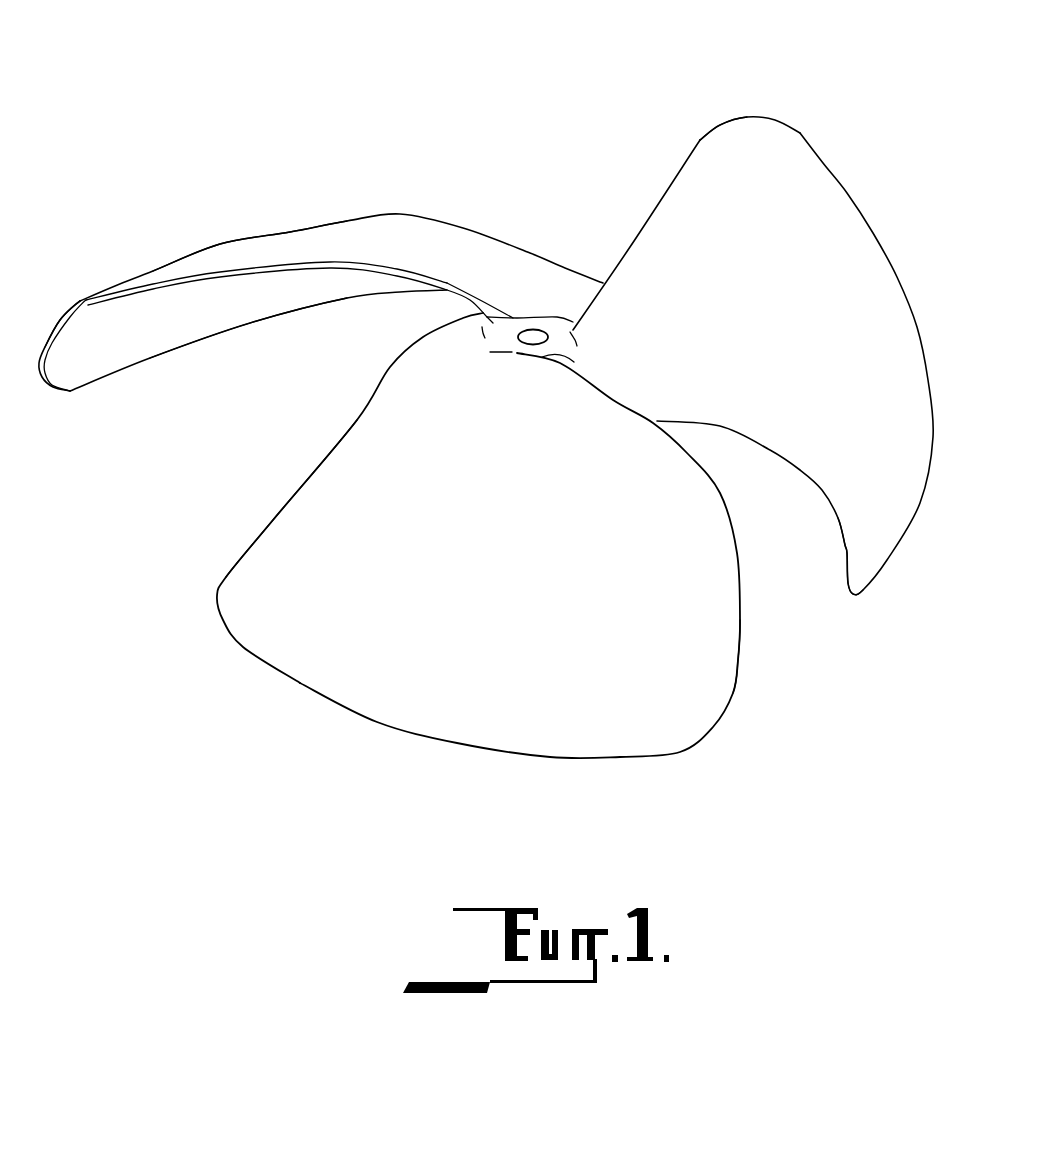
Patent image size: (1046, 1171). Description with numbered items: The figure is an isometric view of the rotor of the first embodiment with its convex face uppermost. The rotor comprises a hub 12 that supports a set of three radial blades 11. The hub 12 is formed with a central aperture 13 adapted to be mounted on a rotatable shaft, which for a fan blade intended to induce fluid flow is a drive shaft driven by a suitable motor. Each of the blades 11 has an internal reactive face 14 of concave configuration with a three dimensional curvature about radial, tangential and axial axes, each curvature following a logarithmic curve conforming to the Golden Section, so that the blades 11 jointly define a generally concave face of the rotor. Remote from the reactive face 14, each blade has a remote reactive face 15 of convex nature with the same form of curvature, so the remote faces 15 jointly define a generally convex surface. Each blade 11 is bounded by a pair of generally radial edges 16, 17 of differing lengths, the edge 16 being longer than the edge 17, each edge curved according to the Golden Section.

The radial blades 11 is at (337, 213).
The hub 12 is at (517, 323).
The central aperture 13 is at (535, 333).
The internal reactive face 14 is at (270, 302).
The remote reactive face 15 is at (257, 232).
The radial edge 16 is at (90, 293).
The radial edge 17 is at (270, 517).